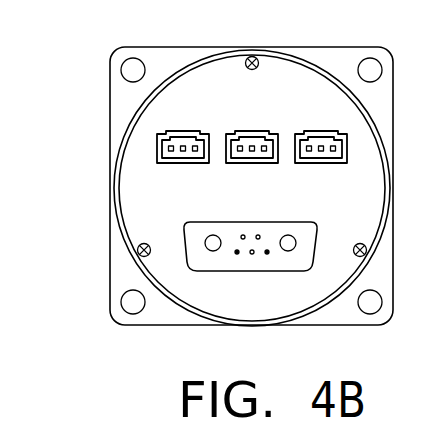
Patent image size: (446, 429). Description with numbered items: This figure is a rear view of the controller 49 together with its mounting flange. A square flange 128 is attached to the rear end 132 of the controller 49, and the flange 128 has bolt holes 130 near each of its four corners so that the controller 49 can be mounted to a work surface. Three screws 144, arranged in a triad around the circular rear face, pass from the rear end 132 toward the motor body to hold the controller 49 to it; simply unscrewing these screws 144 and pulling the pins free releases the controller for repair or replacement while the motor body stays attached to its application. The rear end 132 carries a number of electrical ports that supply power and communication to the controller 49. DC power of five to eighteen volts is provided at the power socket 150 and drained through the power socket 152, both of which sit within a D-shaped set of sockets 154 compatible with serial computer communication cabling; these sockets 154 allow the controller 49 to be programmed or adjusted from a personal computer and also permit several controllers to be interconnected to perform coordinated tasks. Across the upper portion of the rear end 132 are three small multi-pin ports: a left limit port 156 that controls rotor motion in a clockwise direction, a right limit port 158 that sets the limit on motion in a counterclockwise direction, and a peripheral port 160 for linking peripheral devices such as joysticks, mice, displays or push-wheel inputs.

The controller 49 is at (188, 83).
The square flange 128 is at (394, 239).
The bolt holes 130 is at (121, 69).
The rear end 132 is at (272, 108).
The screws 144 is at (247, 56).
The power socket 150 is at (207, 240).
The power socket 152 is at (295, 242).
The set of sockets 154 is at (252, 248).
The left limit port 156 is at (160, 136).
The right limit port 158 is at (250, 159).
The peripheral port 160 is at (341, 134).